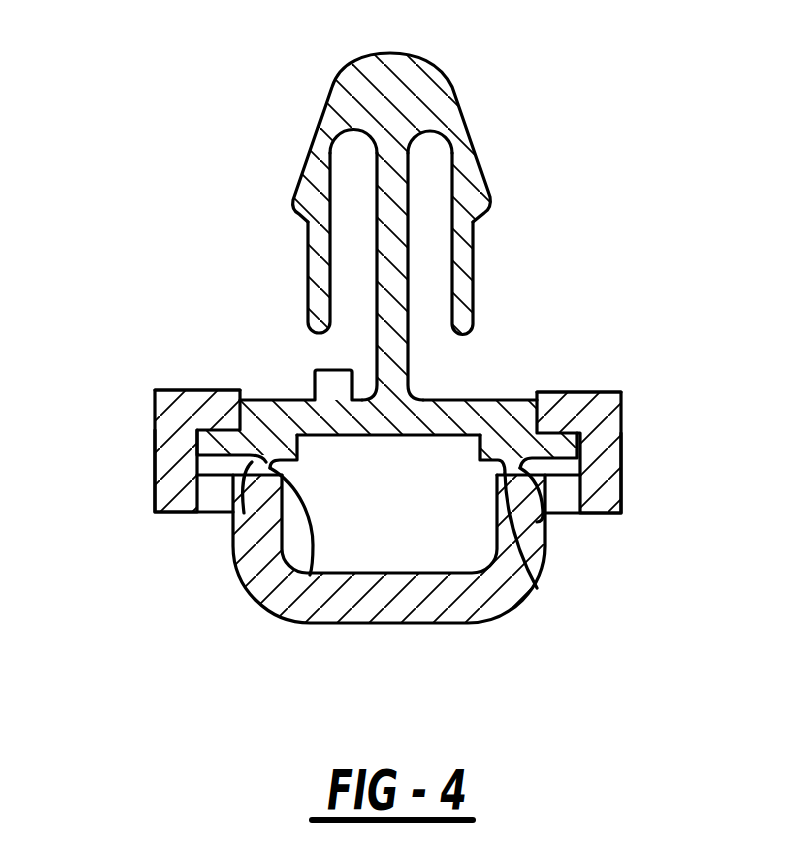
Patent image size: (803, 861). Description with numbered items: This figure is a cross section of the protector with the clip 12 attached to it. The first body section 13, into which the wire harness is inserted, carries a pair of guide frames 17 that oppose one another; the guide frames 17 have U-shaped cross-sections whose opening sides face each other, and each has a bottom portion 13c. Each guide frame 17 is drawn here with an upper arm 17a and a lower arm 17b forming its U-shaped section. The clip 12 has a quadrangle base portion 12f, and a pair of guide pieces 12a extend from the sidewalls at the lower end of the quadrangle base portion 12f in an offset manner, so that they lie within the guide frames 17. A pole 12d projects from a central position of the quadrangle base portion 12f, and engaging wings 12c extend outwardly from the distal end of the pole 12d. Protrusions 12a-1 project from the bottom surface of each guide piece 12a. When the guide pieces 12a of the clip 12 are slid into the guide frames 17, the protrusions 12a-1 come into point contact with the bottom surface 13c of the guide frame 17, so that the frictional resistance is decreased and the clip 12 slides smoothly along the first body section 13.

The clip 12 is at (480, 62).
The guide piece 12a is at (197, 453).
The protrusion 12a-1 is at (310, 575).
The engaging wing 12c is at (318, 147).
The pole 12d is at (410, 218).
The quadrangle base portion 12f is at (470, 400).
The first body section 13 is at (253, 602).
The bottom portion 13c is at (233, 530).
The guide frame 17 is at (153, 395).
The clip upper arm 17a is at (210, 390).
The clip lower arm 17b is at (167, 432).